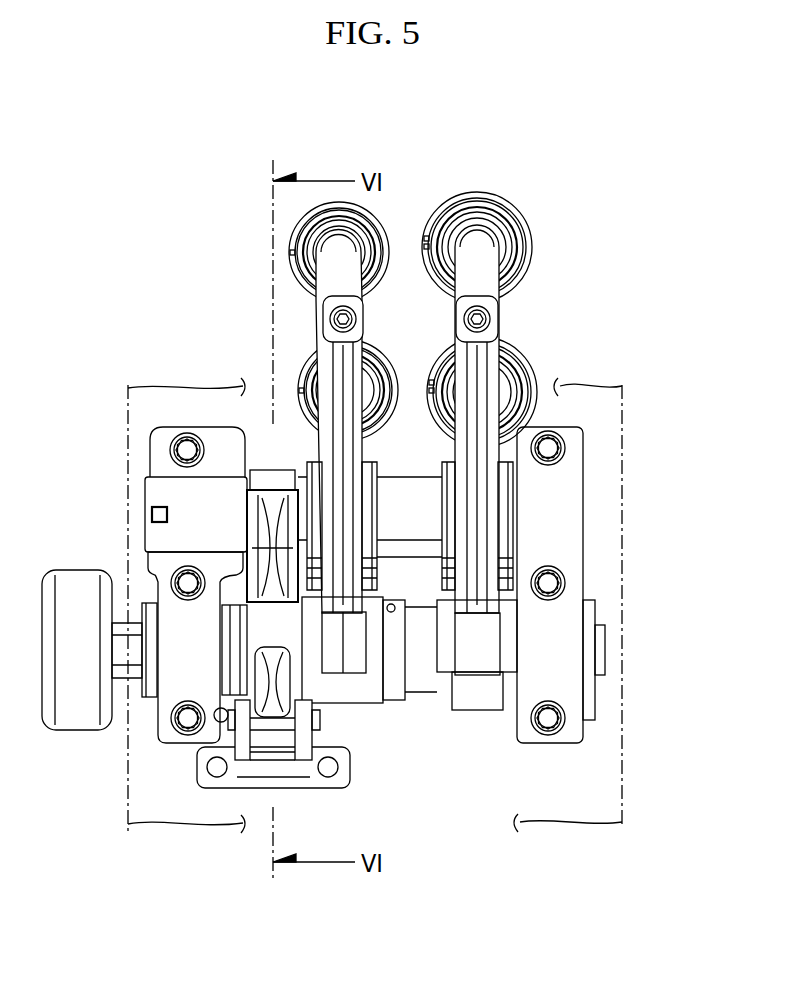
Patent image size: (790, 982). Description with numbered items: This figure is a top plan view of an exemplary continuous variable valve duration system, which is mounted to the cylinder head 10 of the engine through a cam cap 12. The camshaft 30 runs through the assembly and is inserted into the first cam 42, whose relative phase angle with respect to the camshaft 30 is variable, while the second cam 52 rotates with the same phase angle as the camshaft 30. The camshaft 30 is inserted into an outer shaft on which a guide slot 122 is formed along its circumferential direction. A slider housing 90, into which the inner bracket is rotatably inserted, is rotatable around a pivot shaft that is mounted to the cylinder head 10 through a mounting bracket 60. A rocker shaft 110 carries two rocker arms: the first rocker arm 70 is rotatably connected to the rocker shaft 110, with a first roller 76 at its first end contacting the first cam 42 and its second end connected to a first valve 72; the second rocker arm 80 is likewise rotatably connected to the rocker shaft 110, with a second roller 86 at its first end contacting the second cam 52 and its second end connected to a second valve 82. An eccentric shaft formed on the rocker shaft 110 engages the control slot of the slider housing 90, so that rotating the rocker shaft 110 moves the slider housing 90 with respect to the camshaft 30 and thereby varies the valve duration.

The cylinder head 10 is at (622, 708).
The cam cap 12 is at (553, 523).
The camshaft 30 is at (419, 688).
The first cam 42 is at (495, 700).
The second cam 52 is at (343, 705).
The mounting bracket 60 is at (328, 784).
The first rocker arm 70 is at (505, 390).
The first valve 72 is at (523, 352).
The first roller 76 is at (475, 664).
The second rocker arm 80 is at (352, 443).
The second valve 82 is at (377, 353).
The second roller 86 is at (348, 668).
The slider housing 90 is at (281, 733).
The rocker shaft 110 is at (400, 517).
The guide slot 122 is at (276, 486).